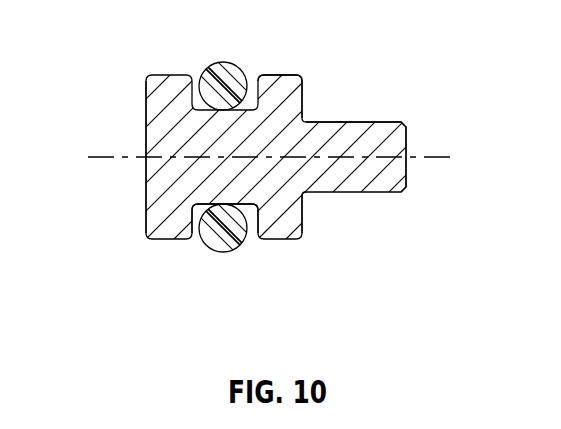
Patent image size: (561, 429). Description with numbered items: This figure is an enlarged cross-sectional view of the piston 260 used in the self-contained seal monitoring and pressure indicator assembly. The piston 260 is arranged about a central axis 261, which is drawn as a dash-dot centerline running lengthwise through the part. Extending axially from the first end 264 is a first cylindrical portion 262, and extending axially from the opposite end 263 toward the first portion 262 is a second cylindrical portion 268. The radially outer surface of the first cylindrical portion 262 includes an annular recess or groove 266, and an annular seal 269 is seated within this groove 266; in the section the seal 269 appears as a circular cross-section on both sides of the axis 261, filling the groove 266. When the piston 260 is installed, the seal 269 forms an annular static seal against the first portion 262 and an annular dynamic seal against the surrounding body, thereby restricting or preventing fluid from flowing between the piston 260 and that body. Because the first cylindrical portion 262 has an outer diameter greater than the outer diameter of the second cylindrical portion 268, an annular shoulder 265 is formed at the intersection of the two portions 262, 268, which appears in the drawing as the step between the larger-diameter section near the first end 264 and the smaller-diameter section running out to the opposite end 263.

The piston 260 is at (170, 83).
The central axis 261 is at (107, 155).
The first cylindrical portion 262 is at (264, 121).
The opposite end 263 is at (410, 139).
The first end 264 is at (145, 216).
The annular shoulder 265 is at (302, 213).
The annular recess or groove 266 is at (195, 231).
The second cylindrical portion 268 is at (352, 121).
The annular seal 269 is at (218, 250).